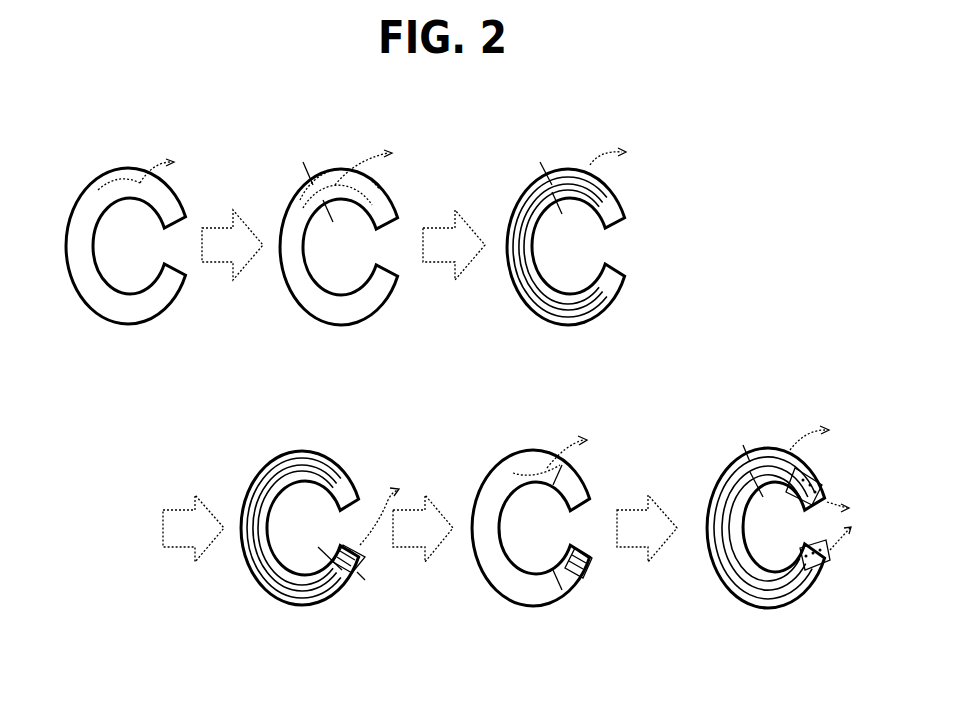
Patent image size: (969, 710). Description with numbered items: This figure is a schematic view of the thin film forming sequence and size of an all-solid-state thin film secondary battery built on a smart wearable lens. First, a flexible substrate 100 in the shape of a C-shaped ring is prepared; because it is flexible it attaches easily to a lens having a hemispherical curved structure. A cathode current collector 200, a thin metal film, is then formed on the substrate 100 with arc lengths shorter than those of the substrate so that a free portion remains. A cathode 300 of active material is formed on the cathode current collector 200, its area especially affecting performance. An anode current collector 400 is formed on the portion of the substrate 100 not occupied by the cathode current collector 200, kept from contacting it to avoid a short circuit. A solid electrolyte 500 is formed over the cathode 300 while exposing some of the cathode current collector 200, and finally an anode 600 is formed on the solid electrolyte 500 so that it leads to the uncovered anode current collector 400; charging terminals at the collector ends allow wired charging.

The flexible substrate 100 is at (85, 195).
The cathode current collector 200 is at (290, 232).
The cathode 300 is at (520, 208).
The anode current collector 400 is at (345, 580).
The solid electrolyte 500 is at (495, 483).
The anode 600 is at (720, 502).